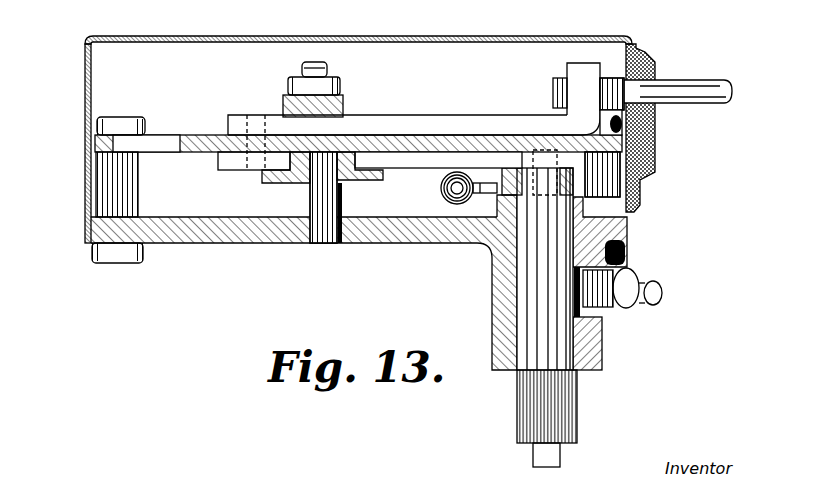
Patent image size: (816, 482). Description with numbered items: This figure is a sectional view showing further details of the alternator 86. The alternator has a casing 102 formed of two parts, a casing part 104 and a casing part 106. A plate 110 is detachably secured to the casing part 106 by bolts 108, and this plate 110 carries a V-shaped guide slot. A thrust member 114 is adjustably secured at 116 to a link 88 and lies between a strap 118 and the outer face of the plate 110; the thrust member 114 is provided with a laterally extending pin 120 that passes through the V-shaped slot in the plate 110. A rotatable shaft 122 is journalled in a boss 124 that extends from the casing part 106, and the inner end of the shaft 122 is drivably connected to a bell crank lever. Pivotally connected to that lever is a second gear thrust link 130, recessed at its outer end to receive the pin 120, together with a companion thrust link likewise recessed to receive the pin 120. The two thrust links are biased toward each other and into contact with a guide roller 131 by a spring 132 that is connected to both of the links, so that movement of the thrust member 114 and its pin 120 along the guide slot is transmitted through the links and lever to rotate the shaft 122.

The alternator 86 is at (370, 126).
The link 88 is at (686, 80).
The casing 102 is at (248, 31).
The casing part 104 is at (343, 36).
The casing part 106 is at (255, 243).
The bolts 108 is at (107, 199).
The plate 110 is at (468, 140).
The thrust member 114 is at (410, 117).
The adjustable securing point 116 is at (582, 66).
The strap 118 is at (343, 106).
The pin 120 is at (260, 115).
The rotatable shaft 122 is at (533, 366).
The boss 124 is at (497, 312).
The second gear thrust link 130 is at (422, 165).
The guide roller 131 is at (293, 183).
The spring 132 is at (463, 197).